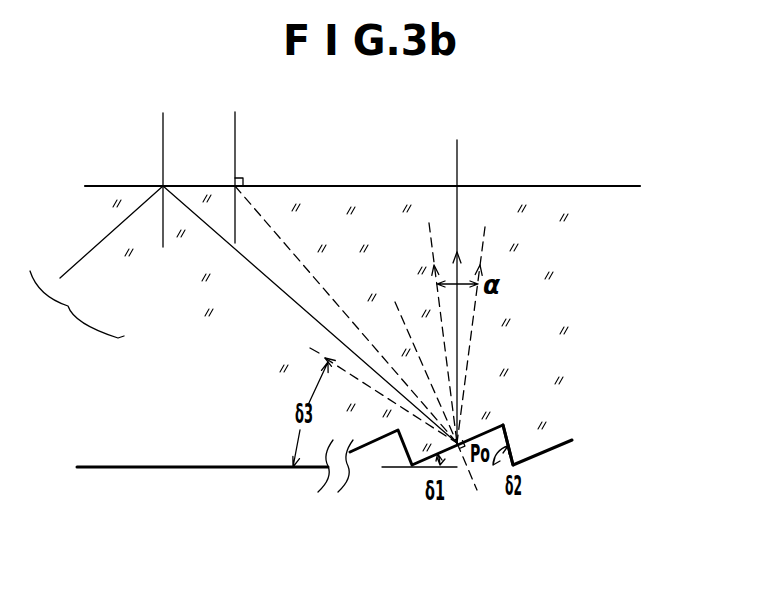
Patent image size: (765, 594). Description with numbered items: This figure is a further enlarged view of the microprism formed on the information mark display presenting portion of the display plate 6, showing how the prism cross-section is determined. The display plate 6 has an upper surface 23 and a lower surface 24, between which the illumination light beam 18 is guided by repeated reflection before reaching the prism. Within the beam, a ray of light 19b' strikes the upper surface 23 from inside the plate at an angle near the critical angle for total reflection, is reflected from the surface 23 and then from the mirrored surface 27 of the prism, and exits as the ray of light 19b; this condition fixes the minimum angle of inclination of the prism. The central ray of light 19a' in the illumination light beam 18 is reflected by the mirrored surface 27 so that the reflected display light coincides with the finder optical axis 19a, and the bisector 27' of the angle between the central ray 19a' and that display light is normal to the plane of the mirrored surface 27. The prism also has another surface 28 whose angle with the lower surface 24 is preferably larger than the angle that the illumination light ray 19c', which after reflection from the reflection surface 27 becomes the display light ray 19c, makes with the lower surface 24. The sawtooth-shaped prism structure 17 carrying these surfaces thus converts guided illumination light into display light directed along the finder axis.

The display plate 6 is at (614, 173).
The upper surface of the display plate 23 is at (300, 180).
The illumination light beam 18 is at (96, 230).
The finder optical axis 19a is at (483, 280).
The ray of light 19b is at (462, 280).
The display light ray 19c is at (515, 280).
The central ray of light in the illumination light beam 19a' is at (310, 314).
The ray of light in the illumination light beam 19b' is at (310, 314).
The illumination light ray 19c' is at (328, 398).
The mirrored surface of the prism 27 is at (481, 484).
The bisector 27' is at (417, 341).
The lower surface of the display plate 24 is at (155, 468).
The sawtooth grating structure 17 is at (461, 488).
The other surface of the prism 28 is at (519, 440).